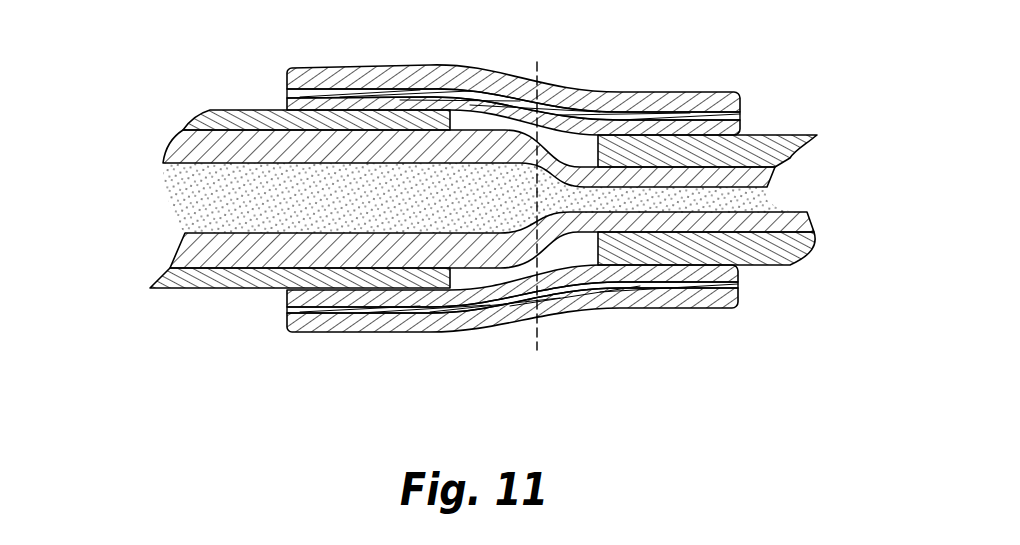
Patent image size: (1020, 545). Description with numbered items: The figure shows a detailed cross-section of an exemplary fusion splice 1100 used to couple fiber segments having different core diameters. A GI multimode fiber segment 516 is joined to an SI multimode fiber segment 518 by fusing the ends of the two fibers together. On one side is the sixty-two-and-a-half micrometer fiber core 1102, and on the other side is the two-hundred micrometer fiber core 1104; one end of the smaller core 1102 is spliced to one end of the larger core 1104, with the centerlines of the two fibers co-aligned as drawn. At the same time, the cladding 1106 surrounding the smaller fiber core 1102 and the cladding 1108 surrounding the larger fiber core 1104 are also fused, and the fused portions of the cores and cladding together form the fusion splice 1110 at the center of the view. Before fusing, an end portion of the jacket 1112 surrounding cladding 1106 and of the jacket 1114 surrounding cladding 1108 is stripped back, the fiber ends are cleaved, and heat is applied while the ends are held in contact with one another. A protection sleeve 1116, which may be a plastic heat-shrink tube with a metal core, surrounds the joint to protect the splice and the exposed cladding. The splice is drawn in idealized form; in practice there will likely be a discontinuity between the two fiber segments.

The fusion splice 1100 is at (283, 406).
The 62.5 μm fiber core 1102 is at (784, 190).
The 200 μm fiber core 1104 is at (320, 226).
The cladding 1106 is at (812, 226).
The cladding 1108 is at (172, 144).
The fusion splice 1110 is at (545, 238).
The jacket 1112 is at (800, 149).
The jacket 1114 is at (210, 117).
The protection sleeve 1116 is at (576, 86).
The GI multimode fiber segment 516 is at (760, 268).
The SI multimode fiber segment 518 is at (204, 290).